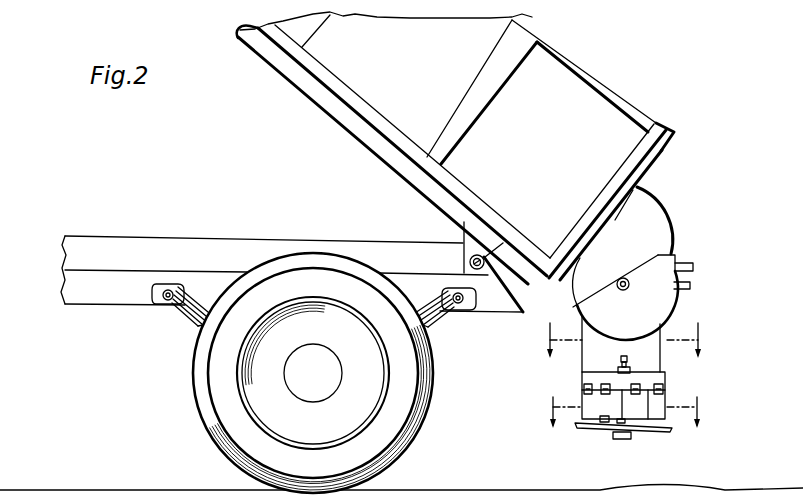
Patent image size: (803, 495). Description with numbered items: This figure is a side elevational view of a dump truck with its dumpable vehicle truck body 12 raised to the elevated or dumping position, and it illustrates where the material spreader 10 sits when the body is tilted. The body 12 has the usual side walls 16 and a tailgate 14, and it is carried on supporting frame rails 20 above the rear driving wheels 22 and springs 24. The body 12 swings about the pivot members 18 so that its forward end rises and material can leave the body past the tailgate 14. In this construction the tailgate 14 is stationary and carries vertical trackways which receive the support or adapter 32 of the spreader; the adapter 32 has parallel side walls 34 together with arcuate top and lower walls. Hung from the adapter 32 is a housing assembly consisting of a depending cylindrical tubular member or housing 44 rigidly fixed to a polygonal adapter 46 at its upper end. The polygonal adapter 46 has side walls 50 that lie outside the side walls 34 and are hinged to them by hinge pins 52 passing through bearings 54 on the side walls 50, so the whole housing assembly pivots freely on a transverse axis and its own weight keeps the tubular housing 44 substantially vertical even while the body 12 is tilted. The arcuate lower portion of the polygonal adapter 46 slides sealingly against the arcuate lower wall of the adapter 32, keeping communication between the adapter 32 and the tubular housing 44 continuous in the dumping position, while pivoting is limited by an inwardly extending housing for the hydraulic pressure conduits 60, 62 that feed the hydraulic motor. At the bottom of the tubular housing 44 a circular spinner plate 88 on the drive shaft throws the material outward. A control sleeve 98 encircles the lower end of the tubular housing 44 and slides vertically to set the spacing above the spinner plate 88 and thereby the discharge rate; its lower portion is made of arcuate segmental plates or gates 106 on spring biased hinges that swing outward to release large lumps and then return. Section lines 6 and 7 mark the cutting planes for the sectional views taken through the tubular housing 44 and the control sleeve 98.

The material spreader 10 is at (644, 310).
The dumpable vehicle truck body 12 is at (476, 148).
The tailgate 14 is at (677, 132).
The side walls 16 is at (605, 110).
The pivot members 18 is at (462, 248).
The supporting frame rails 20 is at (112, 297).
The rear driving wheels 22 is at (407, 439).
The springs 24 is at (195, 316).
The support or adapter 32 is at (646, 211).
The side walls 34 is at (650, 227).
The cylindrical tubular member or housing 44 is at (655, 362).
The polygonal adapter 46 is at (677, 296).
The side walls 50 is at (603, 322).
The hinge pins 52 is at (623, 278).
The bearings 54 is at (628, 294).
The hydraulic pressure conduit 60 is at (694, 266).
The hydraulic pressure conduit 62 is at (691, 285).
The circular spinner plate 88 is at (667, 429).
The control sleeve 98 is at (660, 377).
The segmental plates or gates 106 is at (603, 405).
The section line 6 is at (623, 332).
The section line 7 is at (625, 403).